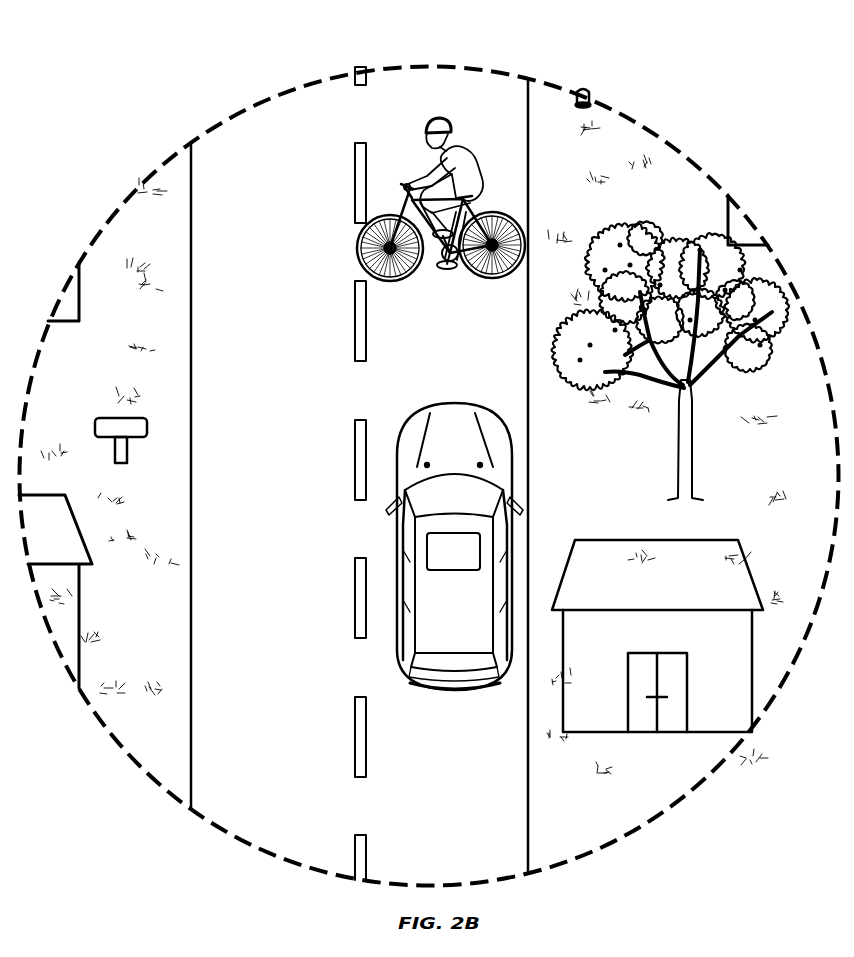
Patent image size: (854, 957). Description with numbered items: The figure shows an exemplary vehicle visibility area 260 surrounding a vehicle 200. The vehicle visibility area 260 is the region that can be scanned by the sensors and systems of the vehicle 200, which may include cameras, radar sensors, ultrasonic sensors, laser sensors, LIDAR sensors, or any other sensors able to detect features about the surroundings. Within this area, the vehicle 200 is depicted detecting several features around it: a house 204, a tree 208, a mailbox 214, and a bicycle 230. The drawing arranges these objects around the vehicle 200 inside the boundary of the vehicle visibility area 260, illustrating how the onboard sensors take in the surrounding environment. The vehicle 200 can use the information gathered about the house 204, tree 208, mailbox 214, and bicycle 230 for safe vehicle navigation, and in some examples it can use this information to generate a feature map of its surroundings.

The vehicle visibility area 260 is at (503, 66).
The bicycle 230 is at (357, 250).
The mailbox 214 is at (147, 424).
The tree 208 is at (697, 443).
The house 204 is at (590, 538).
The vehicle 200 is at (453, 690).